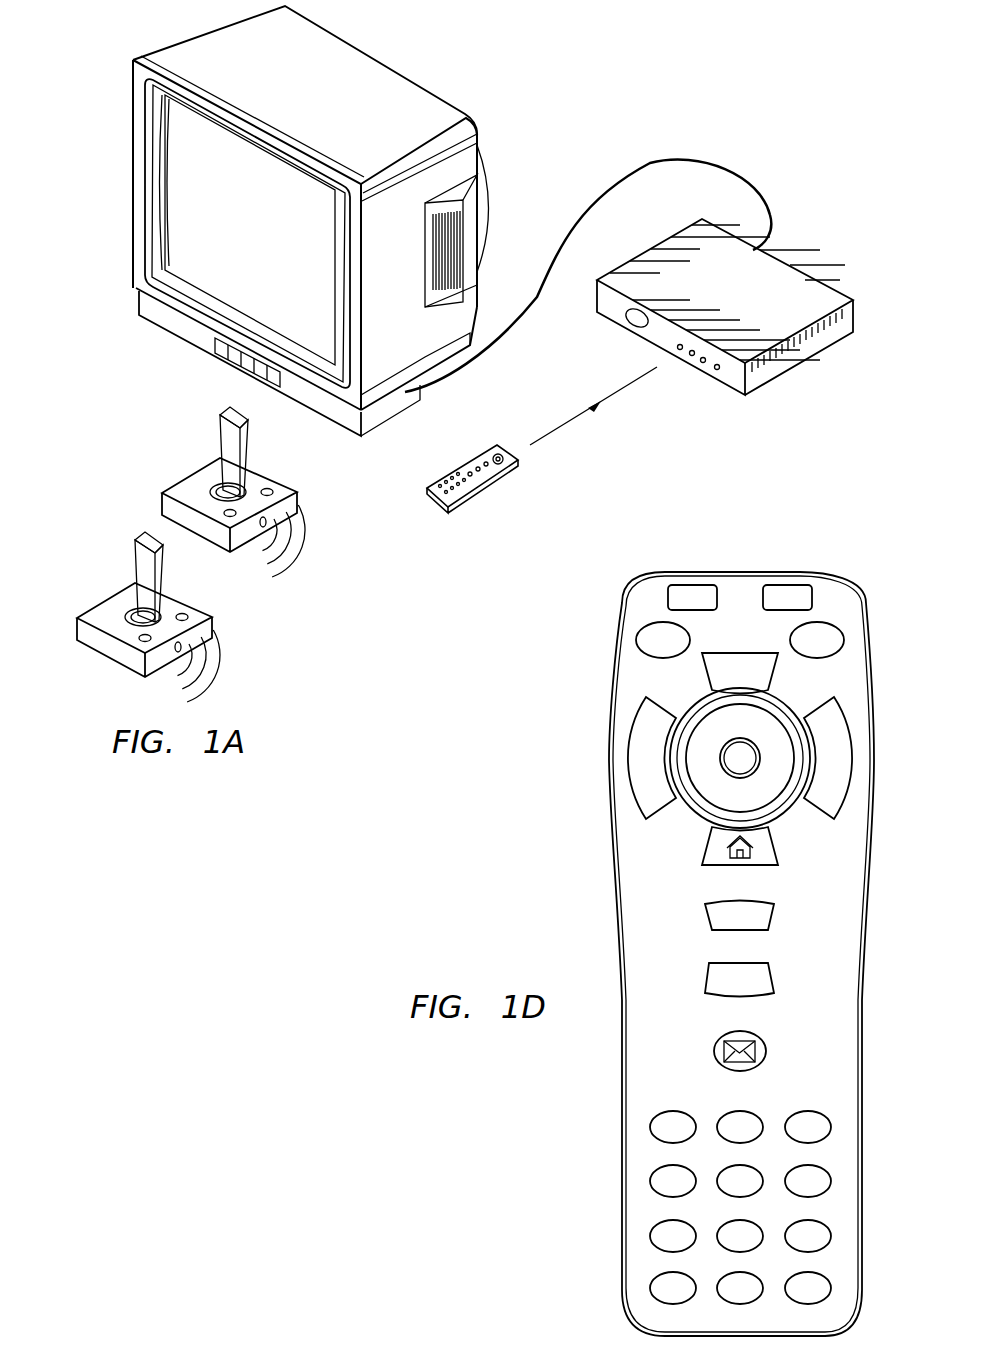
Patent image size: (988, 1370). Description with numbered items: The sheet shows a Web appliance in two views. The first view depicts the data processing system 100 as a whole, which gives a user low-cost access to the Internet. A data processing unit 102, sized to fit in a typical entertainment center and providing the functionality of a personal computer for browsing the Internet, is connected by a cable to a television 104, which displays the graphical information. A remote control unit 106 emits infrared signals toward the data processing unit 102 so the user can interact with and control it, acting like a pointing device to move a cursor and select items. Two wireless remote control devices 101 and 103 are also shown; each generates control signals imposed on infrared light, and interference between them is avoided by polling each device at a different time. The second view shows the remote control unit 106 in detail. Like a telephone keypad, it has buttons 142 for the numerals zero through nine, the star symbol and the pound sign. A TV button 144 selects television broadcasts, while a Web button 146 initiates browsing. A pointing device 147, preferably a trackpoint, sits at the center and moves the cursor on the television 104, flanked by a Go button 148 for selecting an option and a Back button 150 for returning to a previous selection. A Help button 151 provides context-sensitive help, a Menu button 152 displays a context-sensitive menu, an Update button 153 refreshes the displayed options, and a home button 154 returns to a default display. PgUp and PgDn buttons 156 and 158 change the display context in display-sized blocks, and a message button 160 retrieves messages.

In FIG. 1A, the data processing system 100 is at (730, 88).
In FIG. 1A, the wireless remote control device 101 is at (107, 610).
In FIG. 1A, the data processing unit 102 is at (813, 285).
In FIG. 1A, the wireless remote control device 103 is at (193, 482).
In FIG. 1A, the television 104 is at (368, 60).
In FIG. 1A, the remote control unit 106 is at (488, 480).
In FIG. 1D, the remote control unit 106 is at (862, 1001).
In FIG. 1D, the buttons 142 is at (885, 1112).
In FIG. 1D, the TV button 144 is at (693, 585).
In FIG. 1D, the Web button 146 is at (787, 585).
In FIG. 1D, the pointing device 147 is at (747, 750).
In FIG. 1D, the Go button 148 is at (852, 758).
In FIG. 1D, the Back button 150 is at (628, 758).
In FIG. 1D, the Help button 151 is at (637, 640).
In FIG. 1D, the Menu button 152 is at (715, 652).
In FIG. 1D, the Update button 153 is at (843, 639).
In FIG. 1D, the home button 154 is at (703, 842).
In FIG. 1D, the PgUp button 156 is at (770, 920).
In FIG. 1D, the PgDn button 158 is at (711, 971).
In FIG. 1D, the message button 160 is at (714, 1051).